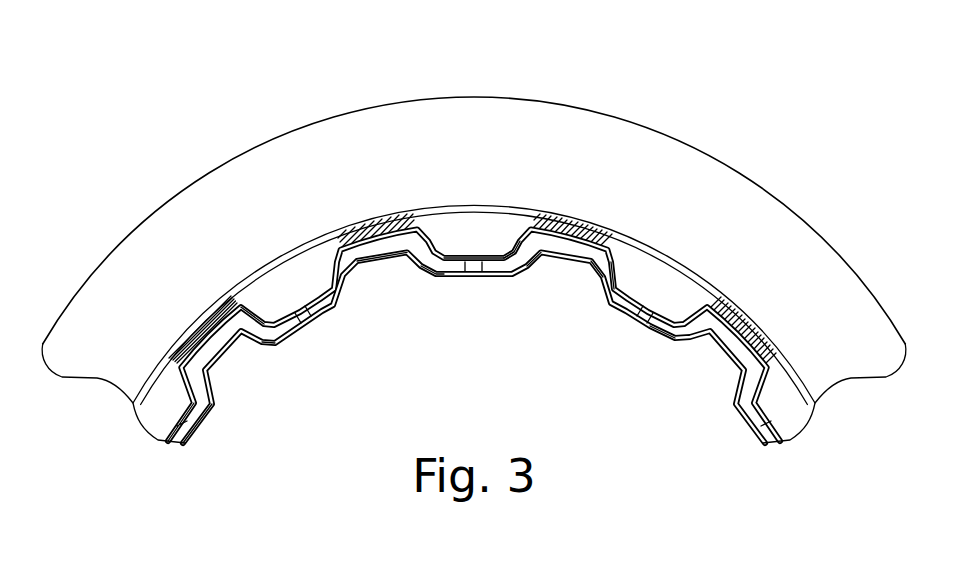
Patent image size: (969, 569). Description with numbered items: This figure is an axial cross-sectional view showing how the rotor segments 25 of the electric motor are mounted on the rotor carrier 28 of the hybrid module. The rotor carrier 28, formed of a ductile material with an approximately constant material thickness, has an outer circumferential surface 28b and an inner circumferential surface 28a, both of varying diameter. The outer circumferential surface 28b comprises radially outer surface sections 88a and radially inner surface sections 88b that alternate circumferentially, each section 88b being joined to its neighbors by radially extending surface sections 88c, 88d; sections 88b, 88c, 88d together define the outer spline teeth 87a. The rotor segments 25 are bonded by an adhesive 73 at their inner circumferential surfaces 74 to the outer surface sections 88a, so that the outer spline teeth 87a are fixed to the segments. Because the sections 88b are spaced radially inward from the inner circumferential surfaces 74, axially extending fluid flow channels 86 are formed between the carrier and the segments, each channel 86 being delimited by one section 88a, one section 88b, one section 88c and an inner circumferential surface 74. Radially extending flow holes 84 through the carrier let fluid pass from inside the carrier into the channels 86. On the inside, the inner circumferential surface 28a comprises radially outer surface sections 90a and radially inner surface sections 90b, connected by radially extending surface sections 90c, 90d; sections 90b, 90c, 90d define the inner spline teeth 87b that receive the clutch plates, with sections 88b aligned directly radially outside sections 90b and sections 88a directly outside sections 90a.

The rotor segments 25 is at (628, 183).
The rotor carrier 28 is at (183, 432).
The inner circumferential surface of rotor carrier 28a is at (274, 355).
The outer circumferential surface of rotor carrier 28b is at (251, 302).
The adhesive 73 is at (203, 320).
The inner circumferential surfaces of rotor segments 74 is at (461, 228).
The flow holes 84 is at (318, 320).
The fluid flow channels 86 is at (453, 228).
The outer spline teeth 87a is at (550, 282).
The inner spline teeth 87b is at (480, 296).
The radially outer surface sections 88a is at (383, 258).
The radially inner surface sections 88b is at (452, 276).
The radially extending surface section 88c is at (423, 227).
The radially extending surface section 88d is at (519, 250).
The radially outer surface sections 90a is at (581, 265).
The radially inner surface sections 90b is at (503, 268).
The radially extending surface section 90c is at (510, 211).
The radially extending surface section 90d is at (600, 281).